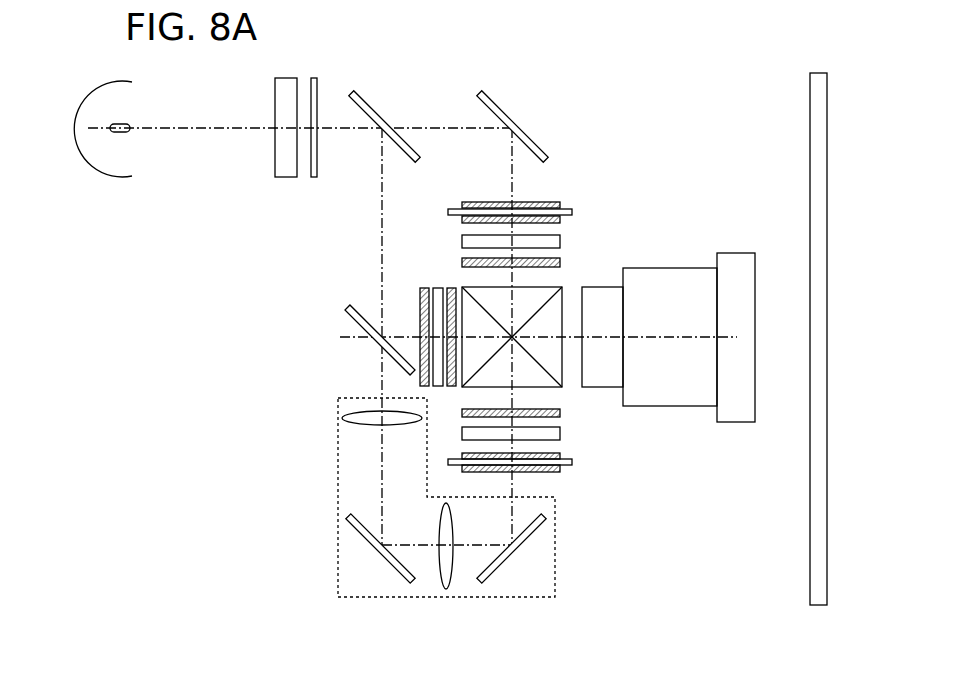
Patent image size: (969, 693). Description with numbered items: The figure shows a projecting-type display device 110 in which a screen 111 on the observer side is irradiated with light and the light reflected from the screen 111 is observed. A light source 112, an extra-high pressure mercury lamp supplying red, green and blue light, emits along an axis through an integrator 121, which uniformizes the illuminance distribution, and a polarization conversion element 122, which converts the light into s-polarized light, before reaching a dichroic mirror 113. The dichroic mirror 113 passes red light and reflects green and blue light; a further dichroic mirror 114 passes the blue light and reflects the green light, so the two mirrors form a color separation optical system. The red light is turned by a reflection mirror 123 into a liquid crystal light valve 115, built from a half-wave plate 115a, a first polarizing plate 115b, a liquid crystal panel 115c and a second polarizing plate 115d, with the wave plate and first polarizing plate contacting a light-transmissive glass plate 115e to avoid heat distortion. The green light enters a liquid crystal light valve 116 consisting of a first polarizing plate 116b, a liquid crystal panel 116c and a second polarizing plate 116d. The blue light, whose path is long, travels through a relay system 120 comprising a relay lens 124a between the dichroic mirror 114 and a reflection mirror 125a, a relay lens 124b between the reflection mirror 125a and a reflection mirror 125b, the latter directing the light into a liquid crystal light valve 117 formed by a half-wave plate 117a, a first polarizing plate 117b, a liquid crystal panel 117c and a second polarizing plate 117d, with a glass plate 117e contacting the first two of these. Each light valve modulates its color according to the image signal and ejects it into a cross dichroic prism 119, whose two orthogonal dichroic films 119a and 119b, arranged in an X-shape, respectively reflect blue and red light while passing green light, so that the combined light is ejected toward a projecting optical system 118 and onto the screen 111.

The projecting-type display device 110 is at (598, 84).
The screen 111 is at (818, 76).
The light source 112 is at (101, 172).
The dichroic mirror 113 is at (373, 111).
The dichroic mirror 114 is at (362, 327).
The liquid crystal light valve 115 is at (579, 200).
The λ/2 wave plate 115a is at (562, 203).
The first polarizing plate 115b is at (561, 220).
The liquid crystal panel 115c is at (561, 242).
The second polarizing plate 115d is at (560, 249).
The light-transmissive glass plate 115e is at (573, 211).
The liquid crystal light valve 116 is at (359, 300).
The first polarizing plate 116b is at (425, 288).
The liquid crystal panel 116c is at (438, 288).
The second polarizing plate 116d is at (449, 288).
The liquid crystal light valve 117 is at (580, 476).
The λ/2 wave plate 117a is at (560, 502).
The first polarizing plate 117b is at (561, 456).
The liquid crystal panel 117c is at (561, 434).
The second polarizing plate 117d is at (561, 413).
The glass plate 117e is at (573, 463).
The projecting optical system 118 is at (736, 424).
The cross dichroic prism 119 is at (505, 305).
The dichroic film 119a is at (549, 302).
The dichroic film 119b is at (463, 292).
The relay system 120 is at (447, 524).
The integrator 121 is at (278, 152).
The polarization conversion element 122 is at (320, 150).
The reflection mirror 123 is at (500, 112).
The relay lens 124a is at (350, 420).
The relay lens 124b is at (447, 590).
The reflection mirror 125a is at (398, 568).
The reflection mirror 125b is at (530, 532).